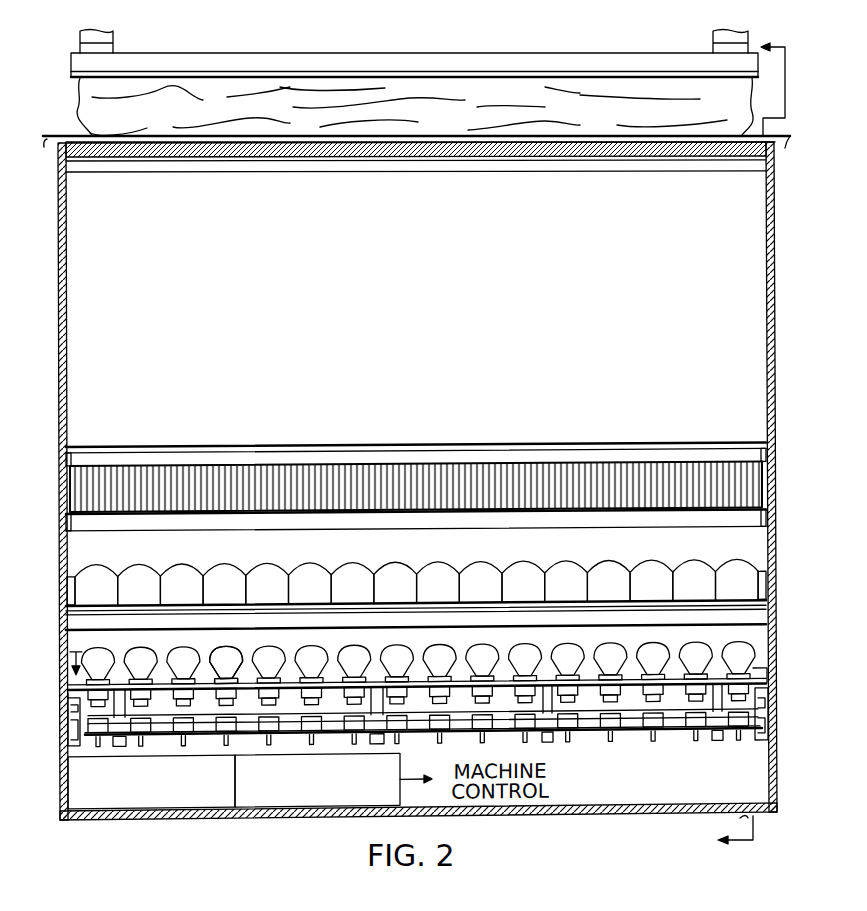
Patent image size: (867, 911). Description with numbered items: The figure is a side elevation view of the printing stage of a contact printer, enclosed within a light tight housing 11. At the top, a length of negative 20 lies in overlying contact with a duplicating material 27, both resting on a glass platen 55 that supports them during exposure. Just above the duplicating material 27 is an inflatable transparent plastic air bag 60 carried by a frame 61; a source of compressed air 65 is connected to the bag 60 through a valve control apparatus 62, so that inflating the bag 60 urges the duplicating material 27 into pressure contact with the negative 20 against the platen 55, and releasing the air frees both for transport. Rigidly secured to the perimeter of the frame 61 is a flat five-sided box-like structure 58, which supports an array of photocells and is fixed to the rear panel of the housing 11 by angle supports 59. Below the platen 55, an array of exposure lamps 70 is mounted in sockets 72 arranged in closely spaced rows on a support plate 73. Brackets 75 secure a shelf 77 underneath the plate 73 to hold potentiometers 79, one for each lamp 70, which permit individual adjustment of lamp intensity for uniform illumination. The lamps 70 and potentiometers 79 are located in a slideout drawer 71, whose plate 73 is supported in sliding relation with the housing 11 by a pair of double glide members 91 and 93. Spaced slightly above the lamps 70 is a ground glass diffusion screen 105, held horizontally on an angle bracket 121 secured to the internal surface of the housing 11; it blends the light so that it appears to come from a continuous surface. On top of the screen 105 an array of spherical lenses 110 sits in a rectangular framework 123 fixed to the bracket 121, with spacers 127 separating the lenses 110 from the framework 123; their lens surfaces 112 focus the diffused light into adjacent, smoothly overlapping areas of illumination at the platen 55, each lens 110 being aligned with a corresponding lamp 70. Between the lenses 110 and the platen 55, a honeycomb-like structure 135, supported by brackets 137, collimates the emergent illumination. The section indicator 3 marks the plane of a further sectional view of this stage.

The section line 3- 3 is at (759, 444).
The light tight housing 11 is at (777, 681).
The negative 20 is at (50, 148).
The duplicating material 27 is at (56, 120).
The glass platen 55 is at (100, 163).
The box-like structure 58 is at (547, 53).
The angle supports 59 is at (80, 40).
The inflatable transparent plastic air bag 60 is at (165, 80).
The frame 61 is at (282, 77).
The valve control apparatus 62 is at (401, 757).
The source of compressed air 65 is at (68, 786).
The exposure lamps 70 is at (172, 654).
The slideout drawer 71 is at (80, 653).
The sockets 72 is at (220, 657).
The support plate 73 is at (296, 690).
The brackets 75 is at (128, 705).
The shelf 77 is at (672, 747).
The potentiometers 79 is at (600, 747).
The double glide member 91 is at (757, 749).
The double glide member 93 is at (68, 729).
The ground glass diffusion screen 105 is at (320, 616).
The spherical lenses 110 is at (347, 572).
The lens surfaces 112 is at (476, 570).
The angle bracket 121 is at (64, 624).
The rectangular framework 123 is at (70, 580).
The spacers 127 is at (760, 580).
The honeycomb-like structure 135 is at (318, 466).
The brackets 137 is at (70, 456).